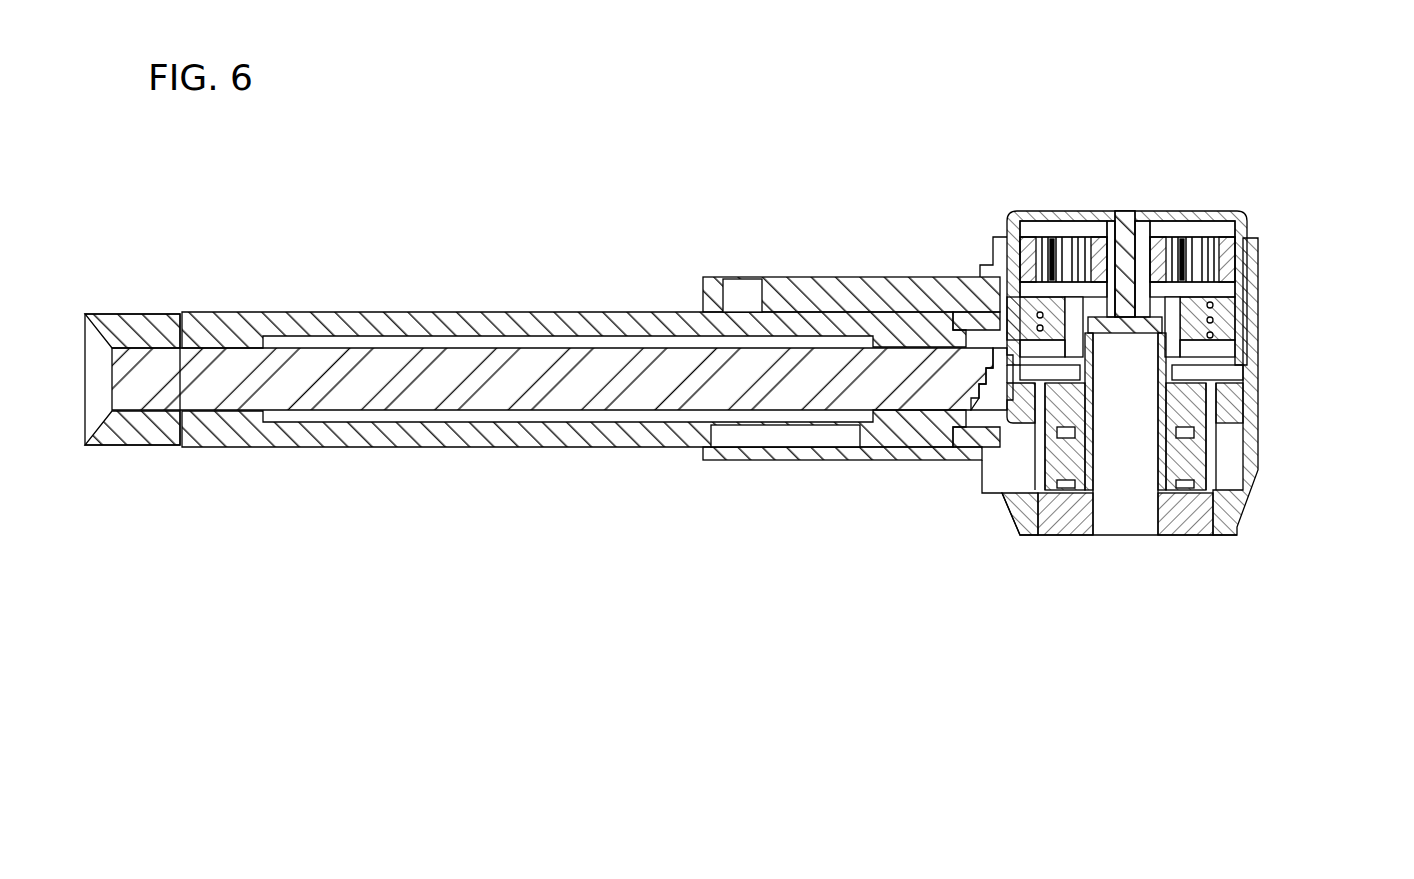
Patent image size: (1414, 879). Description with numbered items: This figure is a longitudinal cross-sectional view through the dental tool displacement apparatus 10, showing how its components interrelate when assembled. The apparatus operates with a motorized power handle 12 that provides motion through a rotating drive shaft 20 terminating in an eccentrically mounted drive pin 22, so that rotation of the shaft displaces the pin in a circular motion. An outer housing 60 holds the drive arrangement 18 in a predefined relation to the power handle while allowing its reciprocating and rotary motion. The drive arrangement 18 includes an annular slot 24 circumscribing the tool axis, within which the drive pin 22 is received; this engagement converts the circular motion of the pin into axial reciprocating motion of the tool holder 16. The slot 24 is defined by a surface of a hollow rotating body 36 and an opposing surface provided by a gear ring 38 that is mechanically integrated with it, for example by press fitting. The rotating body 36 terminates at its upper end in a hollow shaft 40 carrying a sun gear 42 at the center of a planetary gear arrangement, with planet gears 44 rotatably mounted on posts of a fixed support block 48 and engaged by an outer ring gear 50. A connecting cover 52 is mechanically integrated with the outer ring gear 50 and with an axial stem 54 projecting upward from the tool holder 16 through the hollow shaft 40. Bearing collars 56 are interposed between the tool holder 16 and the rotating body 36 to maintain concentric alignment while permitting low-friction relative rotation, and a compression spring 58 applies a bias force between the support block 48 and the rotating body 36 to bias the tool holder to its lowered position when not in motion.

The dental tool displacement apparatus 10 is at (748, 164).
The motorized power handle 12 is at (397, 318).
The tool holder 16 is at (1020, 540).
The drive arrangement 18 is at (1203, 319).
The drive shaft 20 is at (482, 400).
The drive pin 22 is at (1003, 305).
The annular slot 24 is at (1238, 372).
The rotating body 36 is at (1233, 357).
The gear ring 38 is at (1230, 408).
The hollow shaft 40 is at (1180, 245).
The sun gear 42 is at (1085, 245).
The planet gears 44 is at (1183, 245).
The support block 48 is at (1007, 240).
The outer ring gear 50 is at (1230, 255).
The connecting cover 52 is at (1247, 232).
The axial stem 54 is at (1130, 215).
The bearing collar 56 is at (1187, 407).
The compression spring 58 is at (1200, 302).
The outer housing 60 is at (925, 462).